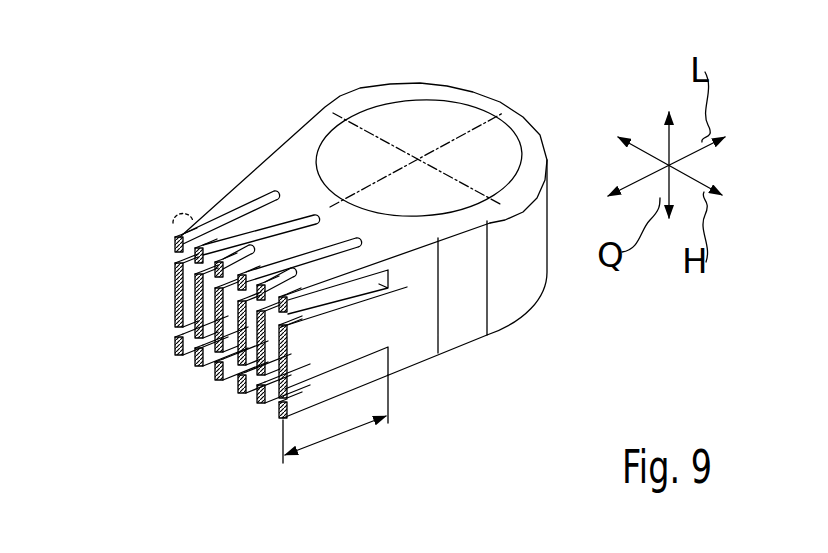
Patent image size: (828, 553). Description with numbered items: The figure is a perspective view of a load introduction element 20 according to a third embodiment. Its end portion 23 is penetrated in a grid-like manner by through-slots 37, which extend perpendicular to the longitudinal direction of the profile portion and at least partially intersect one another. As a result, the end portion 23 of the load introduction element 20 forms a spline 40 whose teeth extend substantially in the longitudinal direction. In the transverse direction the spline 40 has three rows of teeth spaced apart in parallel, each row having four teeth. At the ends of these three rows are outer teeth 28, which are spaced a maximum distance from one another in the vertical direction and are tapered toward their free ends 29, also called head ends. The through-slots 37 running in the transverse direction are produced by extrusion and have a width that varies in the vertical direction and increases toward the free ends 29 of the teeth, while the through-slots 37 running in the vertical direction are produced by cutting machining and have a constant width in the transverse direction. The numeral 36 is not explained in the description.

The load introduction element 20 is at (470, 77).
The through hole 36 is at (490, 169).
The spline 40 is at (206, 187).
The outer teeth 28 is at (166, 250).
The free ends 29 is at (172, 214).
The through-slots 37 is at (181, 373).
The end portion 23 is at (335, 419).